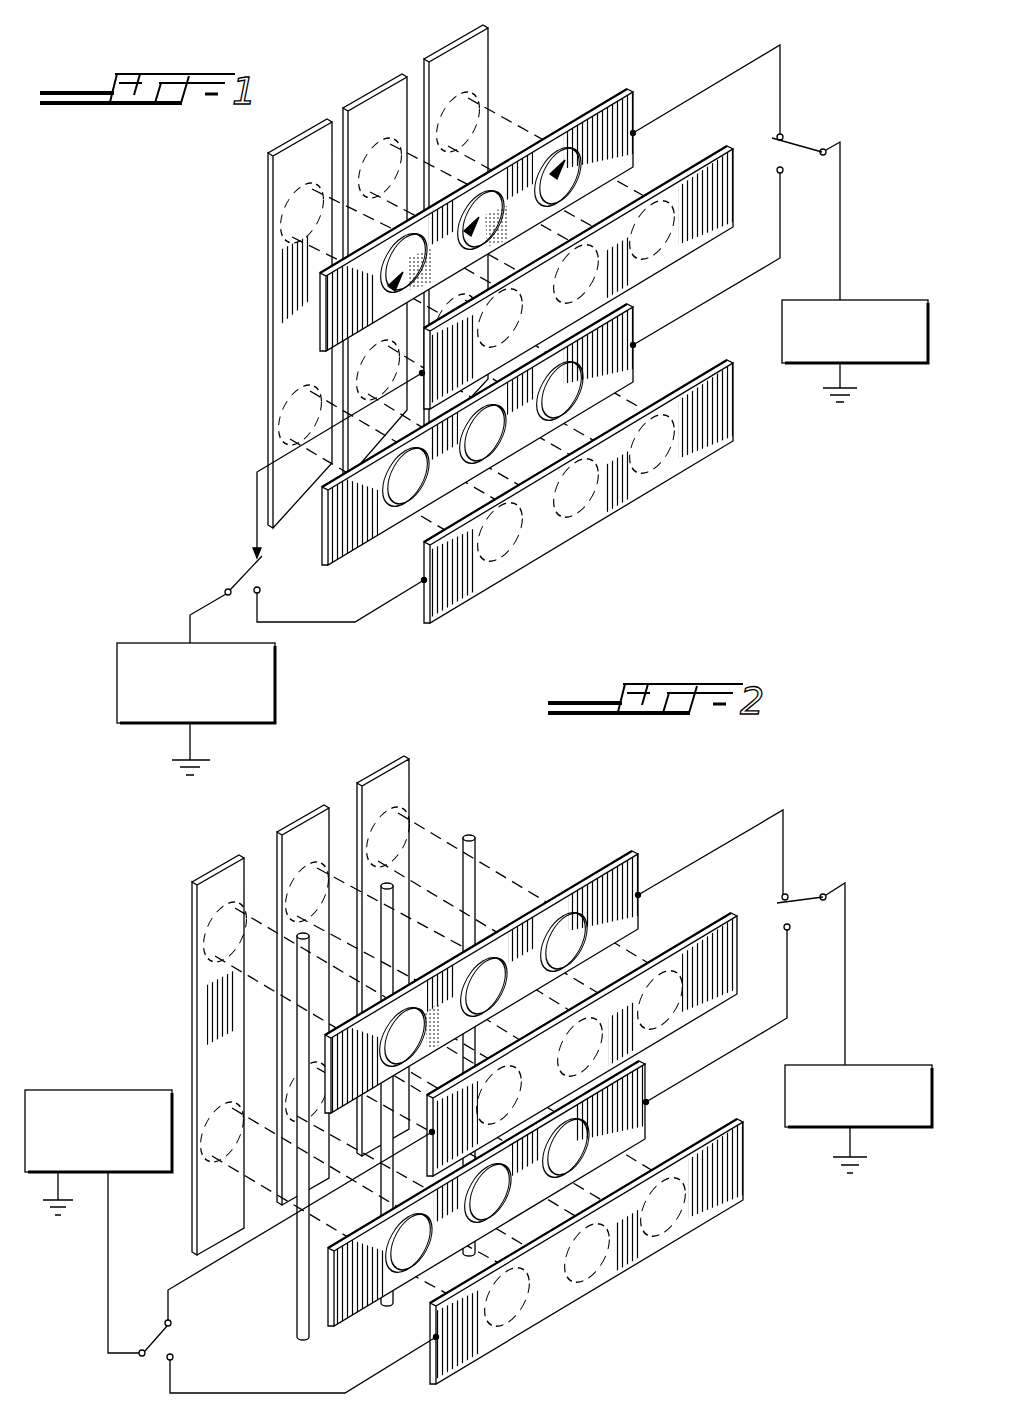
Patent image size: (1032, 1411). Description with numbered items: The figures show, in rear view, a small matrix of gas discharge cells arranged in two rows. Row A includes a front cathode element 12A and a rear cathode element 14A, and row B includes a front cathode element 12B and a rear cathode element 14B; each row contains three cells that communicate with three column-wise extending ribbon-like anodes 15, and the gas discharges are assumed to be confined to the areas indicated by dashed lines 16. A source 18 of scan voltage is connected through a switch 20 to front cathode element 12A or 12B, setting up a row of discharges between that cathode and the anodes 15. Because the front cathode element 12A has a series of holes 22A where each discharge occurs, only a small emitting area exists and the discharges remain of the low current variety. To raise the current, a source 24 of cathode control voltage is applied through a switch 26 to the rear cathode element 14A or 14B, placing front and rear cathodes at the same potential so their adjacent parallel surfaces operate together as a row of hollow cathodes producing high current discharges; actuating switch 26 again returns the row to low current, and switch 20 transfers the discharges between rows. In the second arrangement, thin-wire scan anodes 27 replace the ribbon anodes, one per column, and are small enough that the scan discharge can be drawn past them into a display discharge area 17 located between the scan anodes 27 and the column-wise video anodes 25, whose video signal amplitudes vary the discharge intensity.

In FIG. 1, the front cathode element 12A is at (633, 118).
In FIG. 2, the front cathode element 12A is at (640, 863).
In FIG. 1, the front cathode element 12B is at (371, 540).
In FIG. 2, the front cathode element 12B is at (332, 1323).
In FIG. 1, the rear cathode element 14A is at (722, 154).
In FIG. 2, the rear cathode element 14A is at (703, 931).
In FIG. 1, the rear cathode element 14B is at (470, 599).
In FIG. 2, the rear cathode element 14B is at (497, 1341).
In FIG. 1, the anodes 15 is at (302, 132).
In FIG. 1, the dashed lines 16 is at (476, 84).
In FIG. 2, the display discharge area 17 is at (263, 965).
In FIG. 1, the source of scan voltage 18 is at (908, 297).
In FIG. 2, the source of scan voltage 18 is at (922, 1066).
In FIG. 1, the switch 20 is at (806, 148).
In FIG. 2, the switch 20 is at (800, 897).
In FIG. 1, the holes 22A is at (562, 150).
In FIG. 1, the source of cathode control voltage 24 is at (148, 641).
In FIG. 2, the source of cathode control voltage 24 is at (70, 1089).
In FIG. 2, the video anodes 25 is at (315, 810).
In FIG. 1, the switch 26 is at (238, 581).
In FIG. 2, the switch 26 is at (158, 1341).
In FIG. 2, the scan anodes 27 is at (387, 920).